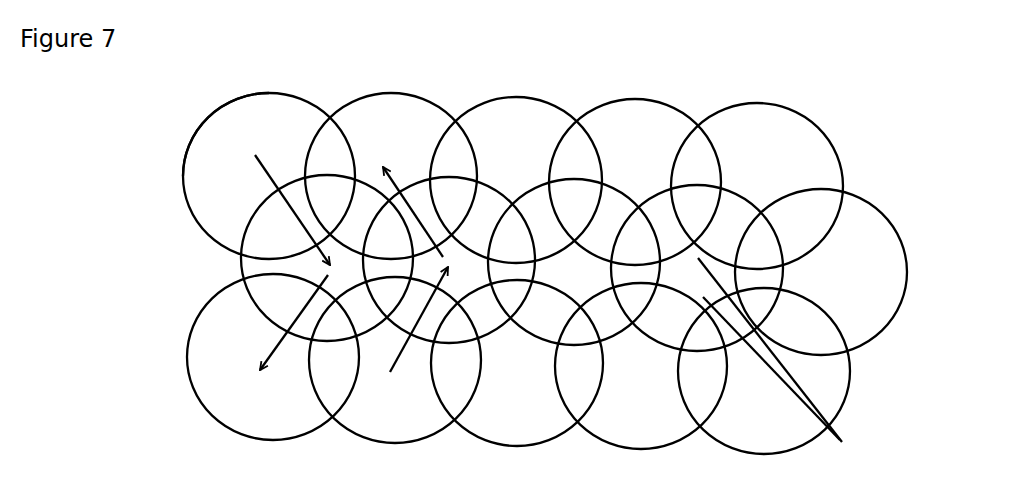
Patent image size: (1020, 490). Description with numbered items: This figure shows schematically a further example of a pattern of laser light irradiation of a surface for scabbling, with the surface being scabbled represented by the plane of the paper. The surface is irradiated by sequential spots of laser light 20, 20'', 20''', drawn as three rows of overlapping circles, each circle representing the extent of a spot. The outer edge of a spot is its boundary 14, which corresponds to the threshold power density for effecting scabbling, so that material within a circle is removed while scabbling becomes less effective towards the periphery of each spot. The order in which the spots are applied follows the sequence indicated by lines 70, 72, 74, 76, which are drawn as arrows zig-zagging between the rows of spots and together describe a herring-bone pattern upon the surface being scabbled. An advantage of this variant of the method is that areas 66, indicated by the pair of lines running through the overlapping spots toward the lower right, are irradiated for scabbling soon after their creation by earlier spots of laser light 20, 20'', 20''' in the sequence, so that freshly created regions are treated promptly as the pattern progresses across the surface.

The boundary 14 is at (184, 202).
The spot of laser light 20 is at (250, 170).
The spot of laser light 20'' is at (273, 258).
The spot of laser light 20''' is at (235, 357).
The areas 66 is at (785, 359).
The line 70 is at (280, 183).
The line 72 is at (300, 338).
The line 74 is at (390, 372).
The line 76 is at (403, 187).